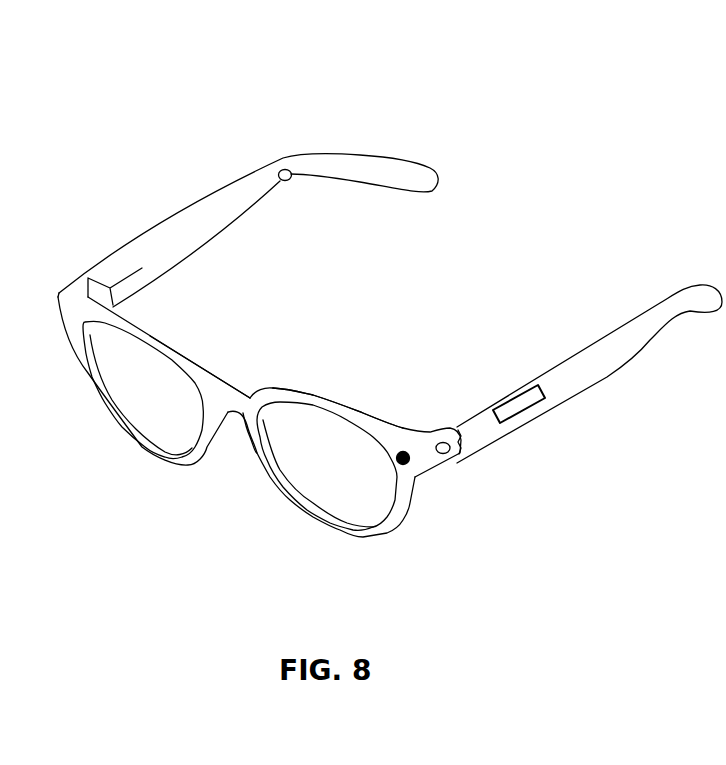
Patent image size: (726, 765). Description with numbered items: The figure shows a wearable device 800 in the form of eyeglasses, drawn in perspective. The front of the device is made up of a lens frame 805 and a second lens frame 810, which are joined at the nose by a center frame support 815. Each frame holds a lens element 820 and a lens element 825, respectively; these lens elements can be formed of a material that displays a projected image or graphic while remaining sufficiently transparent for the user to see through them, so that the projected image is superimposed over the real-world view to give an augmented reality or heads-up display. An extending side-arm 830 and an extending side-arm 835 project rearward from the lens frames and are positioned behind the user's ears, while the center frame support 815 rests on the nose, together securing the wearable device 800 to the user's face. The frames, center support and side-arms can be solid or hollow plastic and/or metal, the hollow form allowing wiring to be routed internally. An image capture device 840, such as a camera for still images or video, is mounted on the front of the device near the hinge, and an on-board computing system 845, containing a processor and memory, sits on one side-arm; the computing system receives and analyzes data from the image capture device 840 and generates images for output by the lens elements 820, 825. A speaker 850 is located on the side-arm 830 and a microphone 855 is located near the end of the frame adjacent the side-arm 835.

The wearable device 800 is at (383, 120).
The lens frame 805 is at (118, 321).
The lens frame 810 is at (367, 420).
The center frame support 815 is at (248, 392).
The lens element 820 is at (170, 432).
The lens element 825 is at (343, 498).
The extending side-arm 830 is at (216, 222).
The extending side-arm 835 is at (603, 356).
The image capture device 840 is at (410, 465).
The on-board computing system 845 is at (527, 410).
The speaker 850 is at (290, 180).
The microphone 855 is at (447, 455).